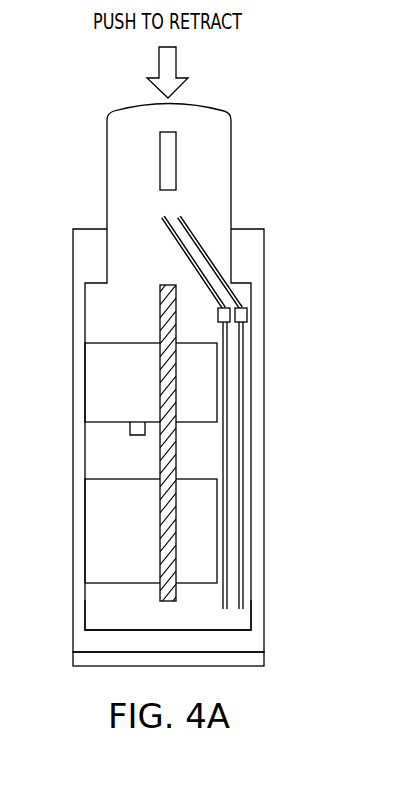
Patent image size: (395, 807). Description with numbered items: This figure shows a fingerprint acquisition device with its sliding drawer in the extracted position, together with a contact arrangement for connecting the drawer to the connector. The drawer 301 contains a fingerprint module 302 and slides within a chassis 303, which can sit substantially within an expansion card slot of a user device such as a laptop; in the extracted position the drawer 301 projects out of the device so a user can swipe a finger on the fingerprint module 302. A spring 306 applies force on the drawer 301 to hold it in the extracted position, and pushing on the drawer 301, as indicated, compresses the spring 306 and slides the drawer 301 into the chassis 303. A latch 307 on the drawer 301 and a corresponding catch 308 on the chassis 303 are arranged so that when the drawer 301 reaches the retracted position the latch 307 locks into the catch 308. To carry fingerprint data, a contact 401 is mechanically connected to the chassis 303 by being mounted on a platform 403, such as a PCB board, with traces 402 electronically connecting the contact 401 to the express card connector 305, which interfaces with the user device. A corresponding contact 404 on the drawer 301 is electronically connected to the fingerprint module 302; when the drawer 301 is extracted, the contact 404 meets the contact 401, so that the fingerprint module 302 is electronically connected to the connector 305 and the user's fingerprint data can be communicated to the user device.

The drawer 301 is at (213, 177).
The fingerprint module 302 is at (168, 160).
The chassis 303 is at (82, 433).
The express card connector 305 is at (250, 658).
The spring 306 is at (170, 525).
The latch 307 is at (125, 333).
The catch 308 is at (138, 430).
The contact 401 is at (228, 316).
The traces 402 is at (242, 452).
The platform 403 is at (240, 620).
The corresponding contact 404 is at (222, 276).